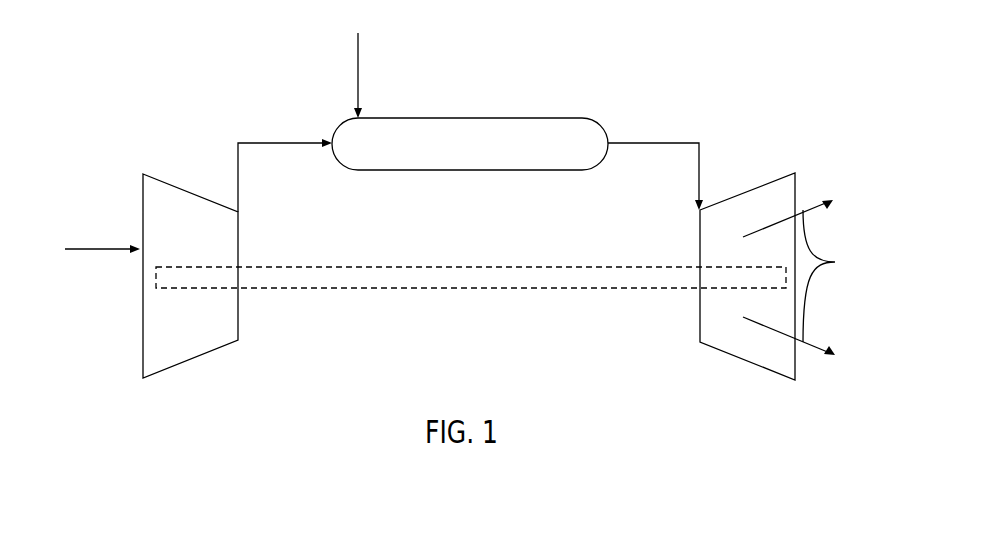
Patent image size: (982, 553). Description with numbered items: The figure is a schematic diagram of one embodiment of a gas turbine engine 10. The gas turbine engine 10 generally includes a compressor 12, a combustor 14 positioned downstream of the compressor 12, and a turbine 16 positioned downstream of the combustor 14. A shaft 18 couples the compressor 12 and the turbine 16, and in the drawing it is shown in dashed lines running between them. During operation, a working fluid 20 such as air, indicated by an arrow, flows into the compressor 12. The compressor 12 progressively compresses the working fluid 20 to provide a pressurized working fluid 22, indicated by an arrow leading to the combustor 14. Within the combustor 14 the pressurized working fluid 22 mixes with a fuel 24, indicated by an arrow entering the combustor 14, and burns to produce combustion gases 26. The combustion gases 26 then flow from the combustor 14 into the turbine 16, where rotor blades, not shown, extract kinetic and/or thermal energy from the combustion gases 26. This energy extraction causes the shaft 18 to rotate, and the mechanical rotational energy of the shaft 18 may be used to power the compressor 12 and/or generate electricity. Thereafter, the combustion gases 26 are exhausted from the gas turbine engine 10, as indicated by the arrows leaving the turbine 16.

The gas turbine engine 10 is at (240, 64).
The compressor 12 is at (180, 183).
The combustor 14 is at (538, 118).
The turbine 16 is at (770, 180).
The shaft 18 is at (438, 290).
The working fluid 20 is at (100, 248).
The pressurized working fluid 22 is at (293, 143).
The fuel 24 is at (359, 78).
The combustion gases 26 is at (642, 143).